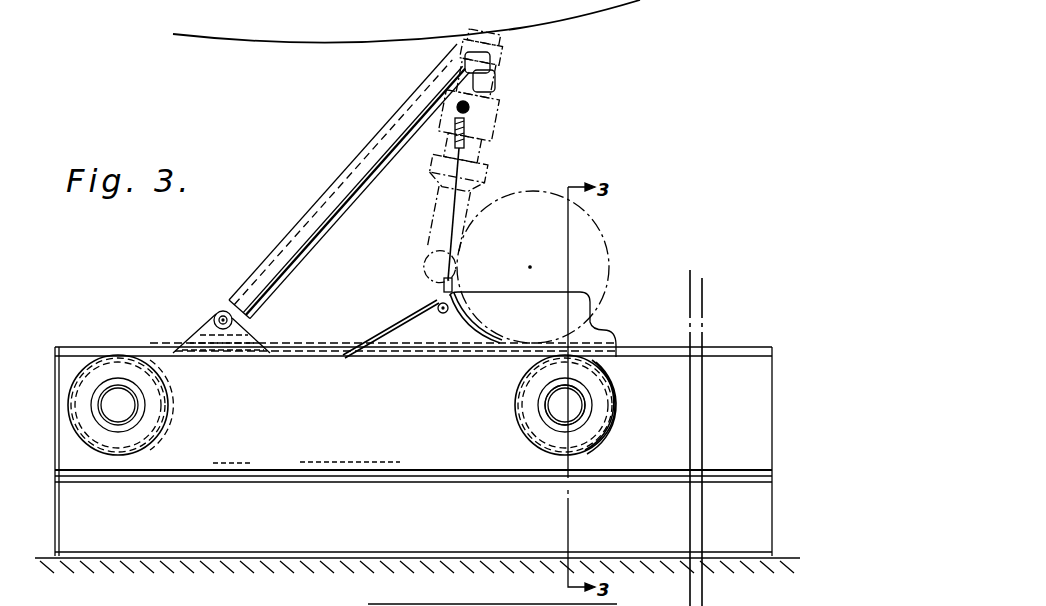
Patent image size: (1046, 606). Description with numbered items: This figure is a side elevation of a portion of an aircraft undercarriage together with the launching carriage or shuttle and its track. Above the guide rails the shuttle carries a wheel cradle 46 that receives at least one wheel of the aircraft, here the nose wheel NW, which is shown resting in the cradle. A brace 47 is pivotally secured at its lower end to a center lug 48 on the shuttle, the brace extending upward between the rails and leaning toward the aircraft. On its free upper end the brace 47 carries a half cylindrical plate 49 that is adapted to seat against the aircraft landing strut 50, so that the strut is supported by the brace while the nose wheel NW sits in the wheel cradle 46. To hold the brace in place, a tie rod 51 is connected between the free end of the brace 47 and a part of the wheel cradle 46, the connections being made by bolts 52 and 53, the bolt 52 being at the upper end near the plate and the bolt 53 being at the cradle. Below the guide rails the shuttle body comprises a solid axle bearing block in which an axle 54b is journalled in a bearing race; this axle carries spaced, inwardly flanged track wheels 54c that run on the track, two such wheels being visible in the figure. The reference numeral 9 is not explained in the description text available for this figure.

The truck frame 9 is at (178, 378).
The wheel cradle 46 is at (582, 305).
The brace 47 is at (282, 283).
The center lug 48 is at (222, 312).
The half cylindrical plate 49 is at (495, 79).
The aircraft landing strut 50 is at (512, 118).
The tie rod 51 is at (452, 196).
The bolt 52 is at (457, 105).
The bolt 53 is at (430, 308).
The axle 54b is at (555, 398).
The track wheels 54c is at (155, 425).
The nose wheel NW is at (592, 247).